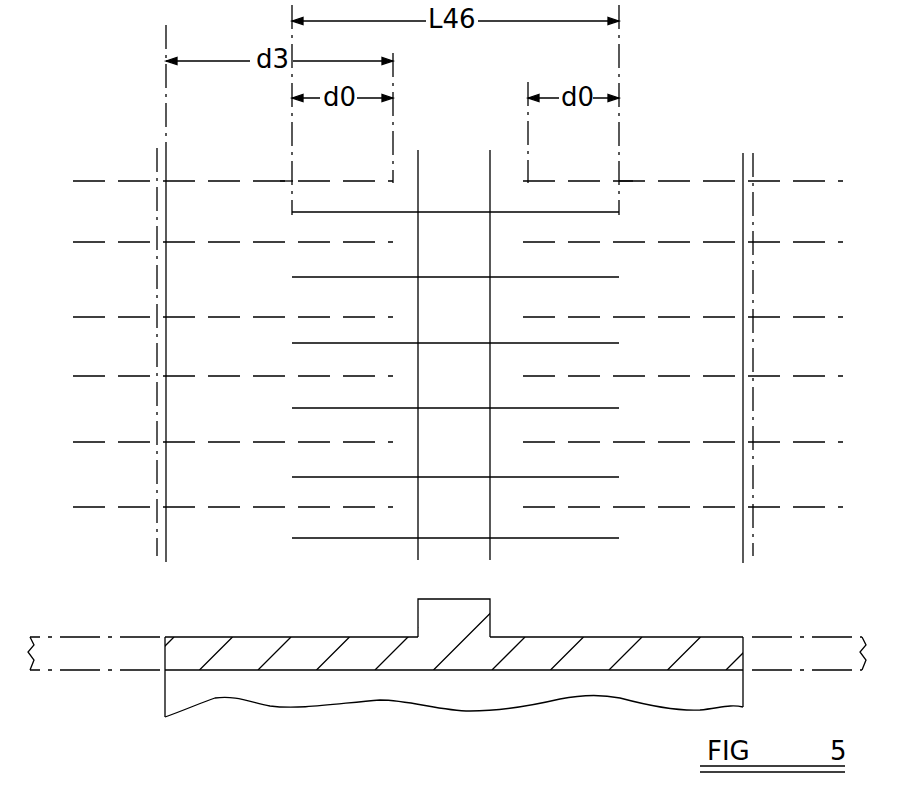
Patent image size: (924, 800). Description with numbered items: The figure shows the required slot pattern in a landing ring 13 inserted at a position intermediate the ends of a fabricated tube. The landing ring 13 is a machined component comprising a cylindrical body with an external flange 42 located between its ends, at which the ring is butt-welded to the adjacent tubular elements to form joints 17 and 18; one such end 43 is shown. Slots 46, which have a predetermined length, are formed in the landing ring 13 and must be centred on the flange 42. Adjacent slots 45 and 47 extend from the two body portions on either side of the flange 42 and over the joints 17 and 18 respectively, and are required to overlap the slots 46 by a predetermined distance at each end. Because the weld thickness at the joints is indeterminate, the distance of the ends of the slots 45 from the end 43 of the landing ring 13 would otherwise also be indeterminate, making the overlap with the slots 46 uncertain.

The landing ring 13 is at (445, 680).
The joint 17 is at (157, 562).
The joint 18 is at (745, 563).
The external flange 42 is at (465, 601).
The end of landing ring 43 is at (168, 658).
The slot 45 is at (281, 174).
The slot 46 is at (452, 200).
The slot 47 is at (636, 174).